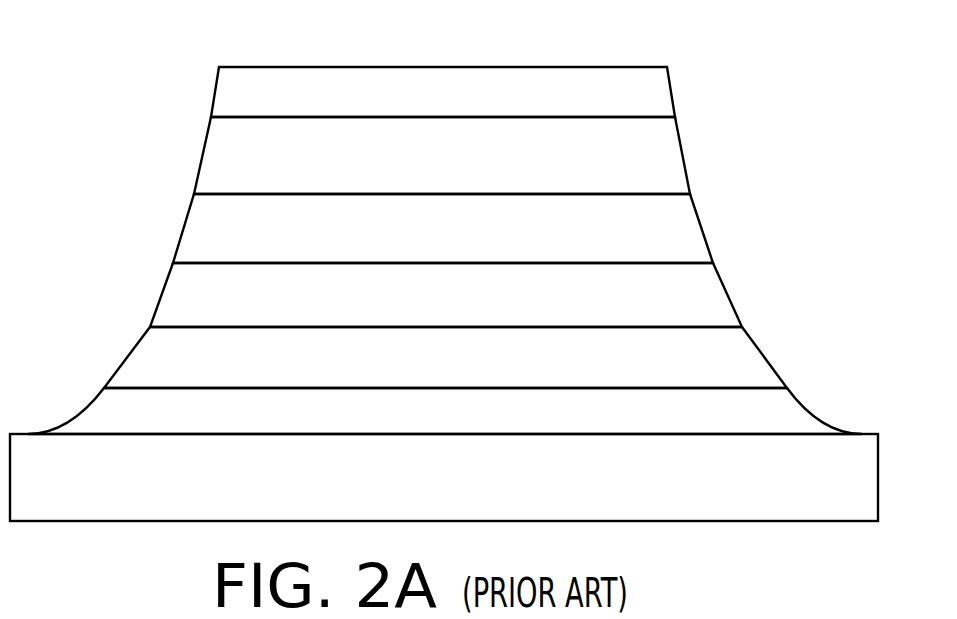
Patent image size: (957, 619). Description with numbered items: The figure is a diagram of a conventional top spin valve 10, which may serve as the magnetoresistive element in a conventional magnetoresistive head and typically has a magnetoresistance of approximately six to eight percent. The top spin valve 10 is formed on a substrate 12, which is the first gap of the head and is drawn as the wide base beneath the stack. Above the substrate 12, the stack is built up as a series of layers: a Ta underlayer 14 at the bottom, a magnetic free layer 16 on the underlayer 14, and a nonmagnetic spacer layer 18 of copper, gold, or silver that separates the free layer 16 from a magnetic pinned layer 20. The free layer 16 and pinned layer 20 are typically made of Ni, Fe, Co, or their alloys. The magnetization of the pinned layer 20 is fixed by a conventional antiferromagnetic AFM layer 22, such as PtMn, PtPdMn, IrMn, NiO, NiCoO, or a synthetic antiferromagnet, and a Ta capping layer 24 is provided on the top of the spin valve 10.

The top spin valve 10 is at (445, 295).
The substrate 12 is at (145, 522).
The underlayer 14 is at (785, 398).
The free layer 16 is at (137, 358).
The spacer layer 18 is at (712, 283).
The pinned layer 20 is at (197, 232).
The AFM layer 22 is at (665, 153).
The capping layer 24 is at (228, 93).